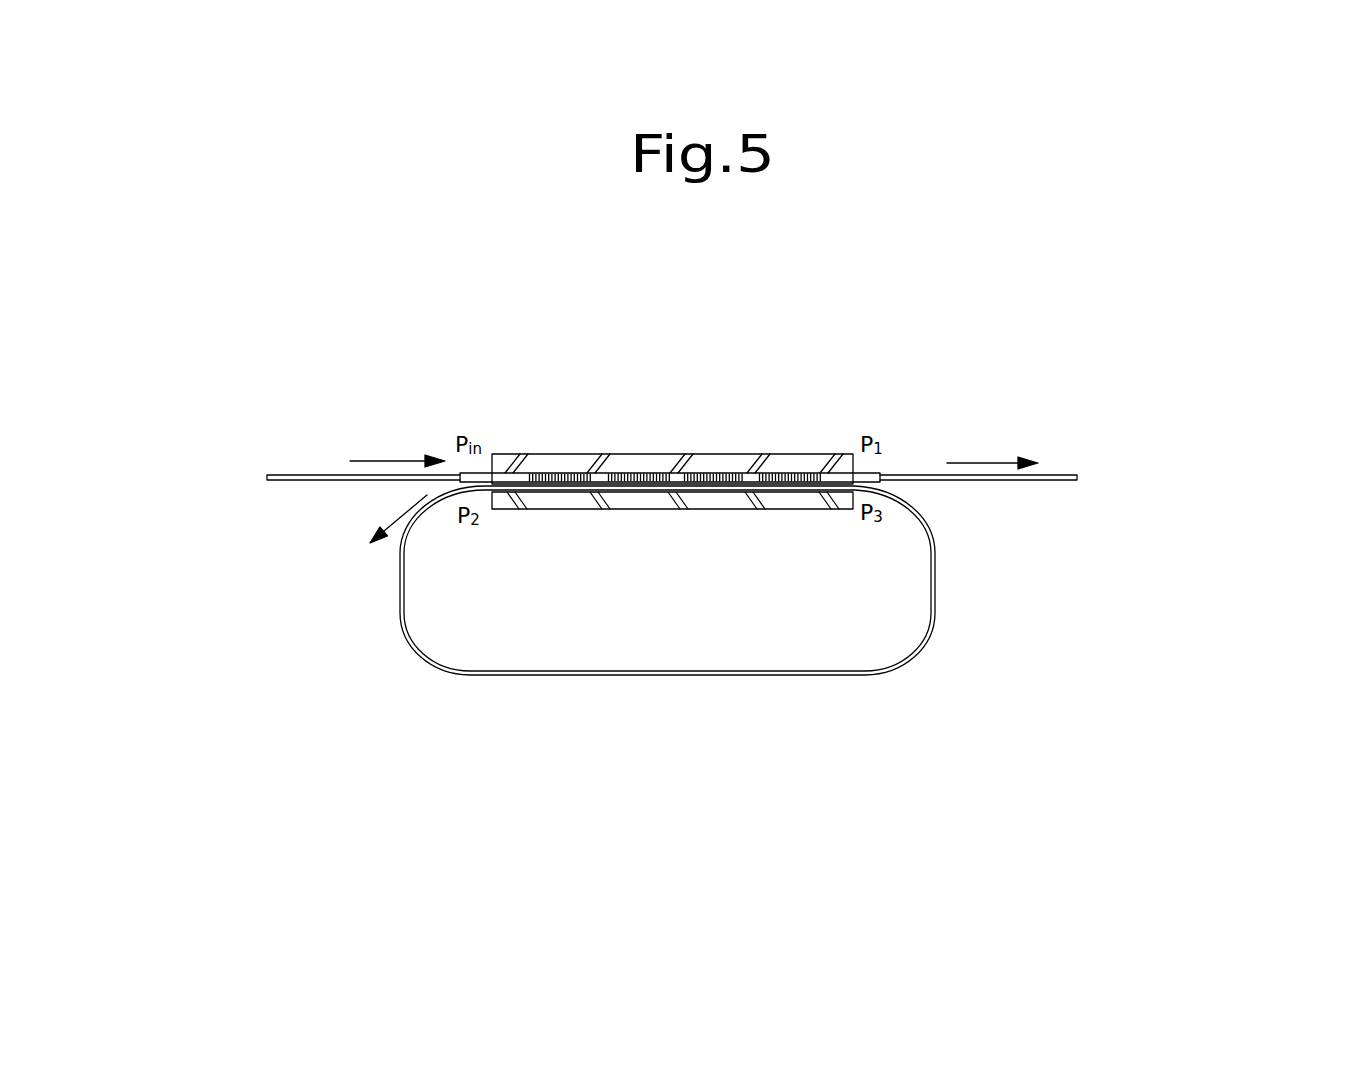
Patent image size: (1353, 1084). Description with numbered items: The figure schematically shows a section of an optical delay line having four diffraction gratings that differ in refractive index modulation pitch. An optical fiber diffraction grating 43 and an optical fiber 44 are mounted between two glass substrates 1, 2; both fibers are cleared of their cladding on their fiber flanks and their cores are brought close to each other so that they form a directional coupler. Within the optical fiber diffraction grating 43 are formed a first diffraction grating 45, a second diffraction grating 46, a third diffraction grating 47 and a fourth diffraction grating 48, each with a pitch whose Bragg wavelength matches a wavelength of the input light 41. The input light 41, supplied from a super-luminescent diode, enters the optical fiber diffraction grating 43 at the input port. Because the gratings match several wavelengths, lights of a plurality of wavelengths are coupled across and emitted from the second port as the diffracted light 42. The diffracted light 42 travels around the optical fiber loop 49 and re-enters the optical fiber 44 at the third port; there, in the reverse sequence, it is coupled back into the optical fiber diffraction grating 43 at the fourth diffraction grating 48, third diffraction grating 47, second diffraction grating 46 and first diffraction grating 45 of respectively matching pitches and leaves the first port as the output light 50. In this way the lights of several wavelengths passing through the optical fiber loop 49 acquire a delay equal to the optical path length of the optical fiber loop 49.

The glass substrate 1 is at (722, 468).
The glass substrate 2 is at (790, 505).
The input light 41 is at (356, 461).
The diffracted light 42 is at (408, 506).
The optical fiber diffraction grating 43 is at (855, 475).
The optical fiber 44 is at (577, 483).
The first diffraction grating 45 is at (541, 472).
The second diffraction grating 46 is at (632, 472).
The third diffraction grating 47 is at (684, 472).
The fourth diffraction grating 48 is at (809, 472).
The optical fiber loop 49 is at (573, 677).
The output light 50 is at (993, 461).